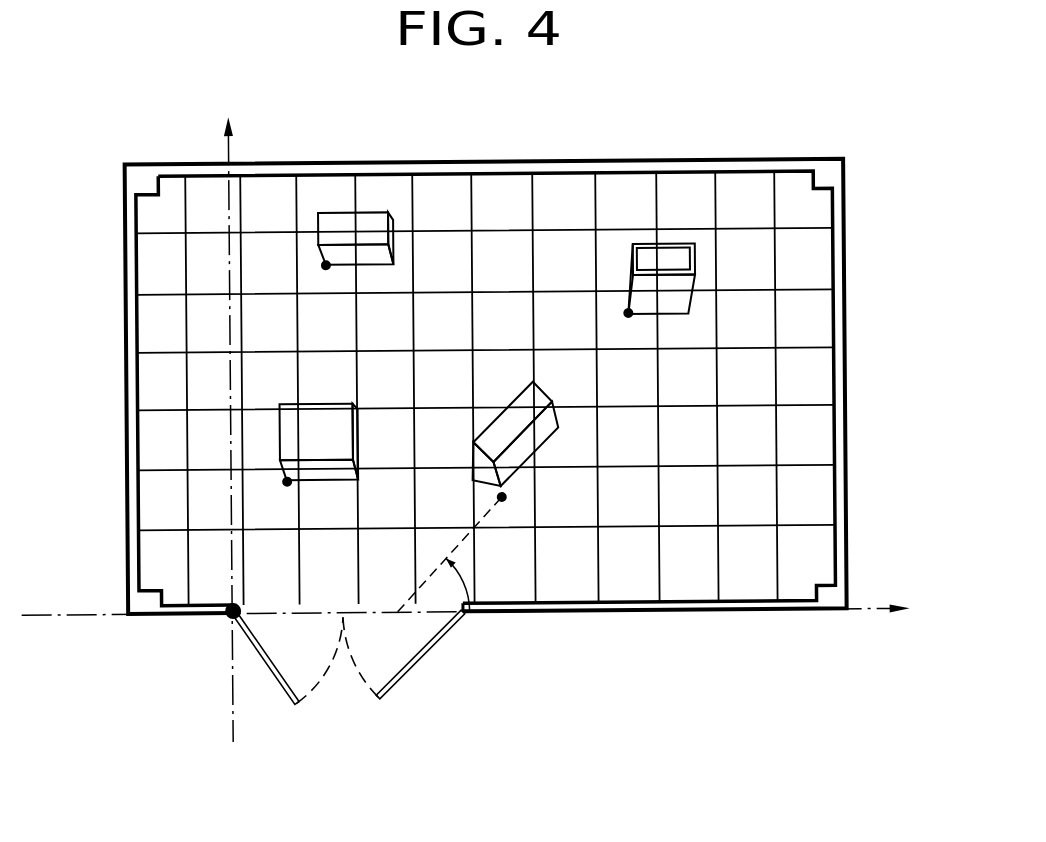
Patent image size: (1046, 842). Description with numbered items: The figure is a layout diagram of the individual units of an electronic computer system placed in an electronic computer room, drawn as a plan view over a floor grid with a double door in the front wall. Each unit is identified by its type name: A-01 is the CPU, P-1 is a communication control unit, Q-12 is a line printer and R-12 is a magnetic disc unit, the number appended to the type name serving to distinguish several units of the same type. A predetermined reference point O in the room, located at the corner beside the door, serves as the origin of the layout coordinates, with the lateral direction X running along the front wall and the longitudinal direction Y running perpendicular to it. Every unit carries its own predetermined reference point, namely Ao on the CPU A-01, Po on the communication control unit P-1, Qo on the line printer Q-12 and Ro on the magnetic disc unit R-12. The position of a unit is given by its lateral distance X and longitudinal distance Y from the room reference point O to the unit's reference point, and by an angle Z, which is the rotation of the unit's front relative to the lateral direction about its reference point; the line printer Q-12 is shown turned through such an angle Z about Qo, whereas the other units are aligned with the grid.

The communication control unit P-1 is at (355, 238).
The magnetic disc unit R-12 is at (662, 278).
The CPU A-01 is at (319, 442).
The line printer Q-12 is at (551, 433).
The reference point on communication control unit Po is at (332, 285).
The reference point on magnetic disc unit Ro is at (637, 329).
The reference point on CPU Ao is at (294, 499).
The reference point on line printer Qo is at (511, 513).
The reference point in electronic computer room O is at (128, 692).
The lateral distance X is at (478, 612).
The longitudinal distance Y is at (228, 409).
The rotation angle Z is at (450, 554).
The double door of computer room door is at (348, 656).